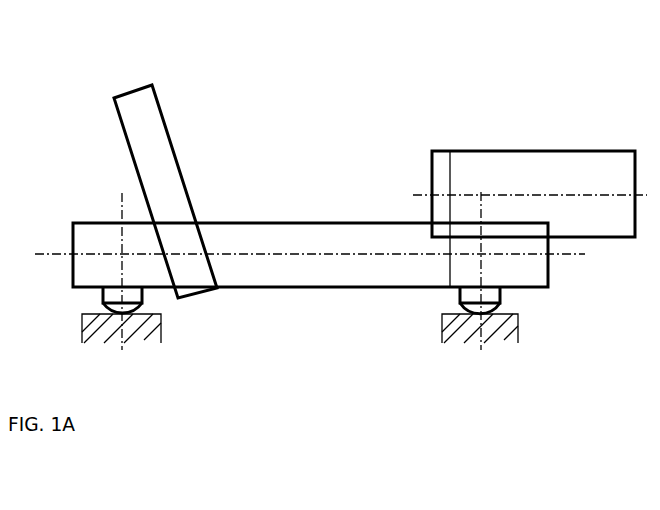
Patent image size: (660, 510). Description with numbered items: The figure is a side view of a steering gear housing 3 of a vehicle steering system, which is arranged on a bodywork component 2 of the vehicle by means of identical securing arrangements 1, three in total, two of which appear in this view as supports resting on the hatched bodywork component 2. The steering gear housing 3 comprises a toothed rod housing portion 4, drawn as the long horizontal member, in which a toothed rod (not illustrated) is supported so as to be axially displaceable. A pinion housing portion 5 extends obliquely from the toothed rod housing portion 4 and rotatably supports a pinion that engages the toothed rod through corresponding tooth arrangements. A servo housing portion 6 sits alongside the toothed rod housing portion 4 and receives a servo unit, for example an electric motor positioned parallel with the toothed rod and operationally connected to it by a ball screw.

The securing arrangement 1 is at (168, 309).
The bodywork component 2 is at (150, 330).
The steering gear housing 3 is at (341, 218).
The toothed rod housing portion 4 is at (350, 233).
The pinion housing portion 5 is at (160, 157).
The servo housing portion 6 is at (507, 157).